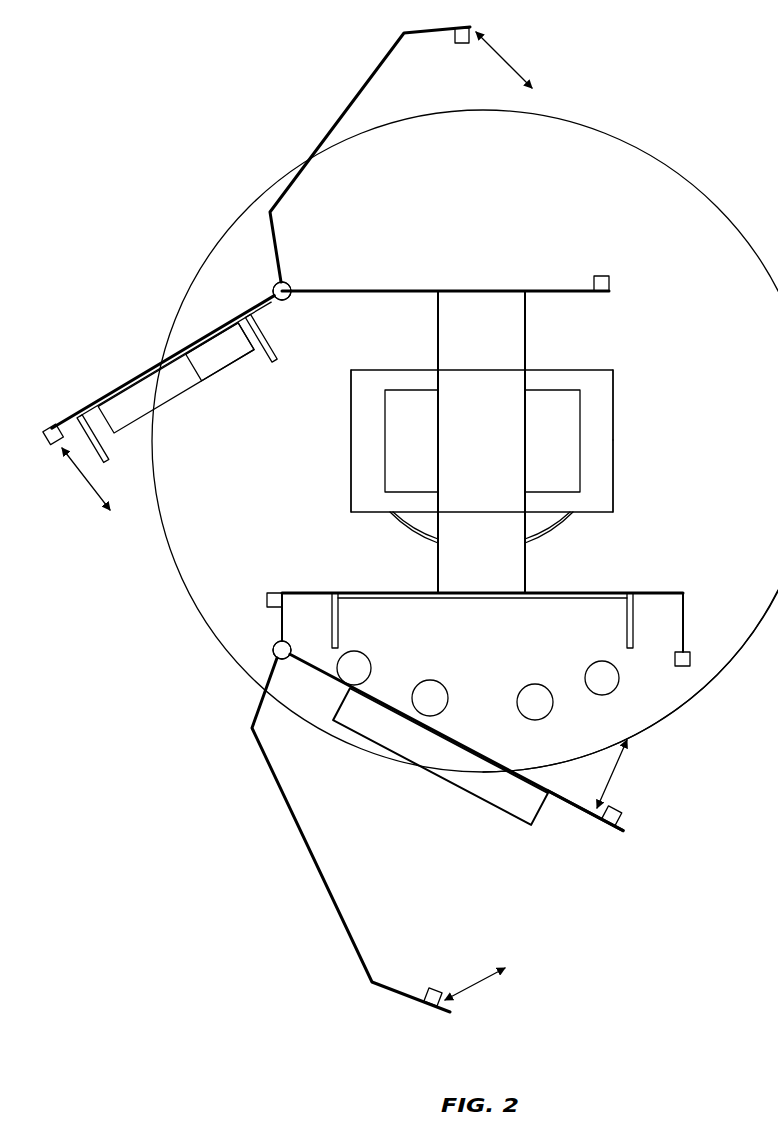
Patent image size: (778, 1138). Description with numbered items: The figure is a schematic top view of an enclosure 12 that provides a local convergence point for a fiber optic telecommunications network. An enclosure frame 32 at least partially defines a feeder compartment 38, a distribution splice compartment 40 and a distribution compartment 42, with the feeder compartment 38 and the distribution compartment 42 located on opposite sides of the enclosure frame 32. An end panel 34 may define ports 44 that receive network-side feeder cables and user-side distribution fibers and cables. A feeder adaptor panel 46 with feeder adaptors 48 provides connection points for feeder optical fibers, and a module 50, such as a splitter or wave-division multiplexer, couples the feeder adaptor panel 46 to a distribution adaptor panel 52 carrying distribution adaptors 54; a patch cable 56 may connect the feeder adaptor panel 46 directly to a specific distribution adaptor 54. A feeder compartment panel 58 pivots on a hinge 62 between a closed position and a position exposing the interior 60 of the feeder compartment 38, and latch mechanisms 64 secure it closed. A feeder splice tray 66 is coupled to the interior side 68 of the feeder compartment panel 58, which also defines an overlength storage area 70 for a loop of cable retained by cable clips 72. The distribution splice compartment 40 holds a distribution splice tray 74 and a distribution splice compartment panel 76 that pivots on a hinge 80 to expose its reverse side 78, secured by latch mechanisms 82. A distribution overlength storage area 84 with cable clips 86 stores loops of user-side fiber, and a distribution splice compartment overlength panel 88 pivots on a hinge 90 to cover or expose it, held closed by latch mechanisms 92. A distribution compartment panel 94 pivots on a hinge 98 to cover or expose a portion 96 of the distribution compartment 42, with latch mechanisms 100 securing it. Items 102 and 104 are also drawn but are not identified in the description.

The enclosure 12 is at (232, 70).
The enclosure frame 32 is at (528, 336).
The end panel 34 is at (650, 714).
The feeder compartment 38 is at (282, 488).
The distribution splice compartment 40 is at (560, 665).
The distribution compartment 42 is at (660, 215).
The ports 44 is at (427, 687).
The feeder adaptor panel 46 is at (358, 388).
The feeder adaptors 48 is at (345, 410).
The module 50 is at (410, 405).
The distribution adaptor panel 52 is at (615, 410).
The distribution adaptors 54 is at (615, 468).
The patch cable 56 is at (412, 538).
The feeder compartment panel 58 is at (125, 380).
The interior of the feeder compartment 60 is at (325, 445).
The hinge 62 is at (272, 295).
The latch mechanisms 64 is at (45, 440).
The feeder splice tray 66 is at (168, 392).
The interior side of the feeder compartment panel 68 is at (205, 378).
The overlength storage area 70 is at (112, 445).
The cable clips 72 is at (80, 432).
The distribution splice tray 74 is at (497, 800).
The distribution splice compartment panel 76 is at (561, 805).
The reverse side of the distribution splice compartment panel 78 is at (512, 772).
The hinge 80 is at (275, 647).
The latch mechanisms 82 is at (692, 657).
The distribution overlength storage area 84 is at (461, 618).
The cable clips 86 is at (333, 605).
The distribution splice compartment overlength panel 88 is at (308, 840).
The hinge 90 is at (283, 660).
The latch mechanisms 92 is at (430, 985).
The distribution compartment panel 94 is at (362, 88).
The portion of the distribution compartment 96 is at (503, 245).
The hinge 98 is at (290, 285).
The latch mechanisms 100 is at (463, 43).
The top plate 102 is at (368, 293).
The guide rail 104 is at (165, 362).